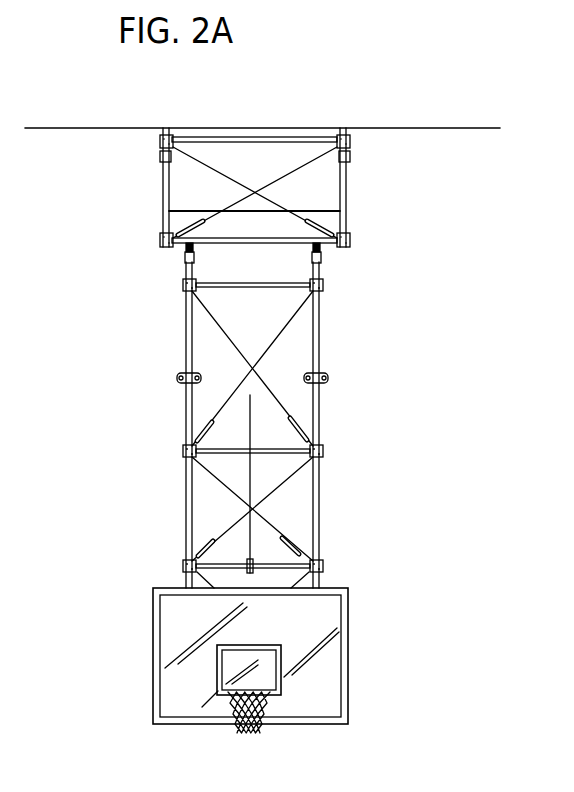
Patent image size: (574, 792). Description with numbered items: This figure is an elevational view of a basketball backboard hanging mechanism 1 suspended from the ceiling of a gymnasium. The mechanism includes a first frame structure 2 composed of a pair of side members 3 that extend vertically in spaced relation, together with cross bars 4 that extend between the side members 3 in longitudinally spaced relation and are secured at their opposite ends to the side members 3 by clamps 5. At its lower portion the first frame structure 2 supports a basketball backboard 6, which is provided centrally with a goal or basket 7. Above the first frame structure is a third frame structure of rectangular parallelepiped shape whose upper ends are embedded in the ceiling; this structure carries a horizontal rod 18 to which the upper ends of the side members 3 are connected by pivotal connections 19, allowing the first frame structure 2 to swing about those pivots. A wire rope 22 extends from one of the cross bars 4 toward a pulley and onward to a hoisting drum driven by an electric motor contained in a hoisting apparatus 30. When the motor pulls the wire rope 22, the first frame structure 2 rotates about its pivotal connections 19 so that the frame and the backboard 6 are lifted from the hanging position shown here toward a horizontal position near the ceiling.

The basketball backboard hanging mechanism 1 is at (372, 461).
The first frame structure 2 is at (322, 330).
The side members 3 is at (186, 329).
The cross bars 4 is at (253, 283).
The clamps 5 is at (183, 285).
The basketball backboard 6 is at (341, 651).
The goal or basket 7 is at (262, 728).
The horizontal rod 18 is at (210, 238).
The pivotal connections 19 is at (184, 254).
The wire rope 22 is at (249, 433).
The hoisting apparatus 30 is at (287, 222).